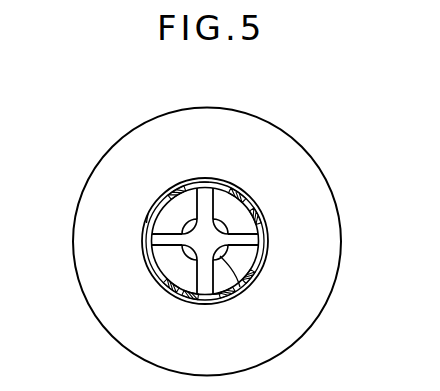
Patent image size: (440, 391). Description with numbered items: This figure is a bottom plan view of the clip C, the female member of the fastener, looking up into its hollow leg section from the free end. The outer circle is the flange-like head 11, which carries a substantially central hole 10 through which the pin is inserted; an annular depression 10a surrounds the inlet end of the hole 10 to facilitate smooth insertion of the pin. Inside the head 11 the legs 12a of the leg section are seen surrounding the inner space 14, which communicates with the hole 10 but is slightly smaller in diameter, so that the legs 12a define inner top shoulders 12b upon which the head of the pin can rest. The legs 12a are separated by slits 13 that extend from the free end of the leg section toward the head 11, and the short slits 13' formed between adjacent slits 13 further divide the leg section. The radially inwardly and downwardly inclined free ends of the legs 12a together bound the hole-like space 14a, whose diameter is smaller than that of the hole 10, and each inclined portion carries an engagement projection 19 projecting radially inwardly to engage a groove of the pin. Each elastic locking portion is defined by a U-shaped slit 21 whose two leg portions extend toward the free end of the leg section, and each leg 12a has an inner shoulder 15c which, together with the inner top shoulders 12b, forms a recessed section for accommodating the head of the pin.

The clip C is at (113, 146).
The flange-like head 11 is at (245, 123).
The hole 10 is at (264, 227).
The annular depression 10a is at (257, 198).
The legs 12a is at (216, 294).
The inner top shoulders 12b is at (148, 217).
The slits 13 is at (172, 250).
The short slits 13' is at (188, 268).
The inner space 14 is at (253, 263).
The hole-like space 14a is at (193, 246).
The inner shoulder 15c is at (204, 184).
The engagement projection 19 is at (240, 287).
The U-shaped slit 21 is at (176, 188).